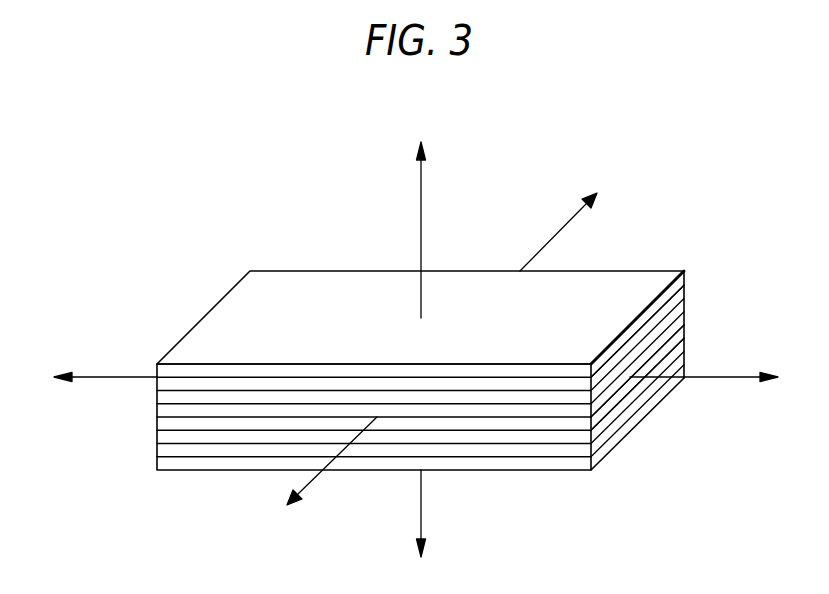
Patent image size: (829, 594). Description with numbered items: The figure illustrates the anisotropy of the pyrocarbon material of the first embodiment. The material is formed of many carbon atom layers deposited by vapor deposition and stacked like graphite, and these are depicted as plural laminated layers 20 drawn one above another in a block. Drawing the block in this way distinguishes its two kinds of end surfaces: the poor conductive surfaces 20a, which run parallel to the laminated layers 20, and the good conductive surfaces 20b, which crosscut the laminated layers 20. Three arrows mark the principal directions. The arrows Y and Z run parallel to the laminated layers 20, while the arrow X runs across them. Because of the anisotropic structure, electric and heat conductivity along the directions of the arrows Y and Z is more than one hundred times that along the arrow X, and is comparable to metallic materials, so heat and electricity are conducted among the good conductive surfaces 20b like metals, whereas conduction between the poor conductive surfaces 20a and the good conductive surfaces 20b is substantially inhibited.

The laminated layers 20 is at (588, 280).
The poor conductive surfaces 20a is at (667, 283).
The good conductive surfaces 20b is at (663, 350).
The arrow X is at (421, 177).
The arrow Y is at (96, 380).
The arrow Z is at (313, 480).